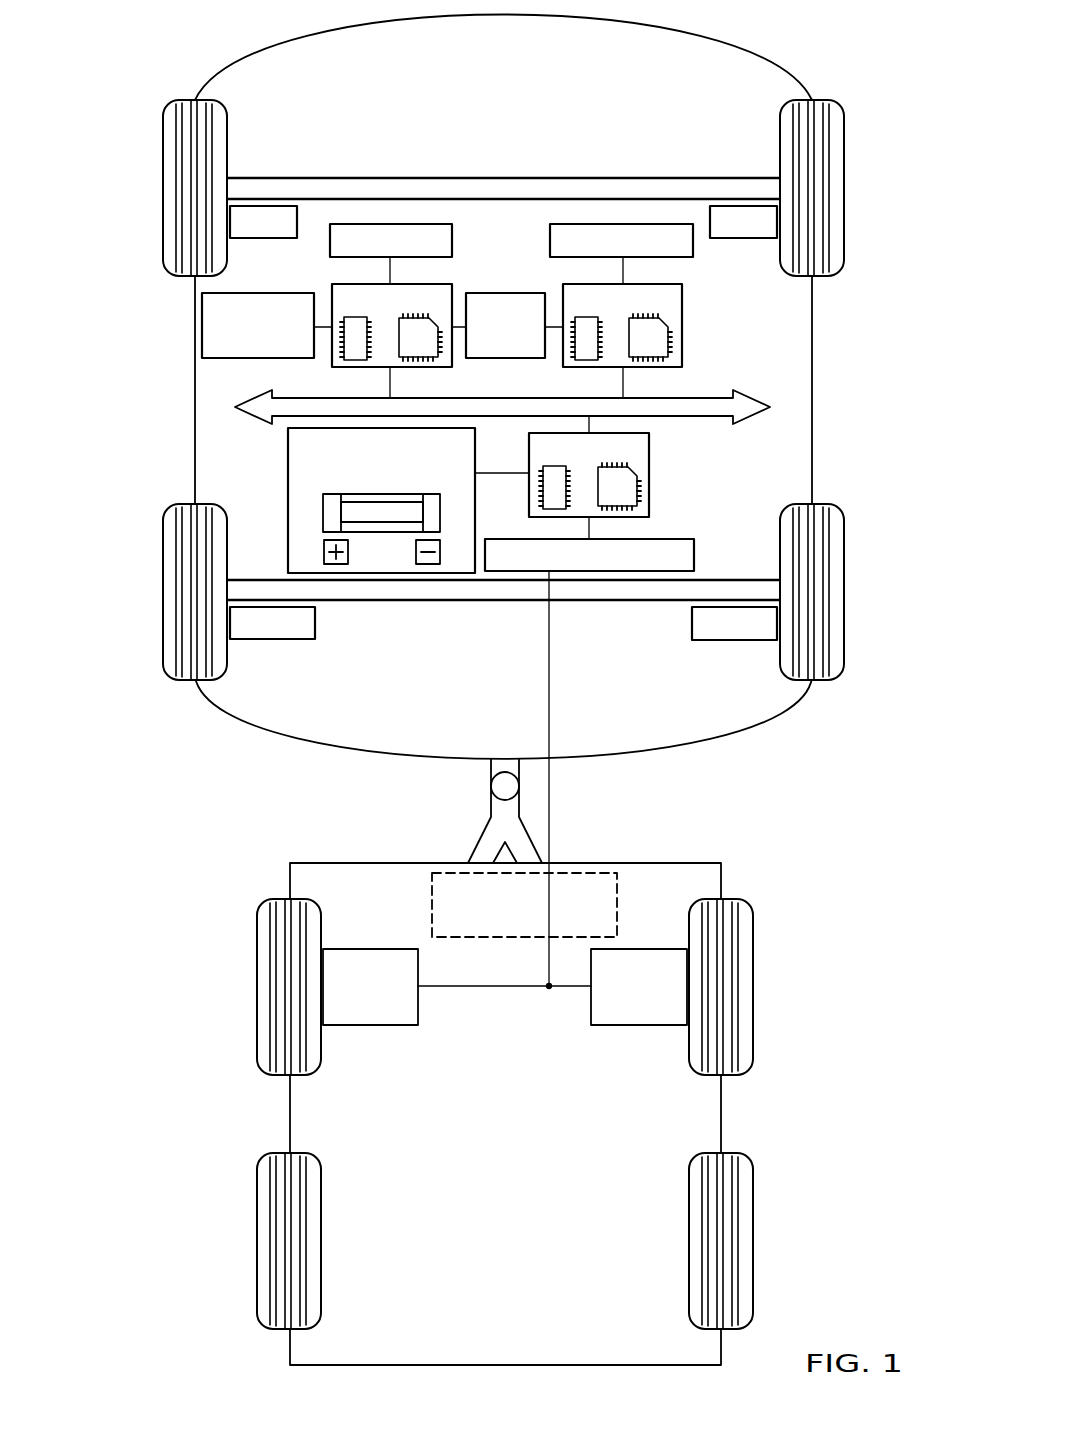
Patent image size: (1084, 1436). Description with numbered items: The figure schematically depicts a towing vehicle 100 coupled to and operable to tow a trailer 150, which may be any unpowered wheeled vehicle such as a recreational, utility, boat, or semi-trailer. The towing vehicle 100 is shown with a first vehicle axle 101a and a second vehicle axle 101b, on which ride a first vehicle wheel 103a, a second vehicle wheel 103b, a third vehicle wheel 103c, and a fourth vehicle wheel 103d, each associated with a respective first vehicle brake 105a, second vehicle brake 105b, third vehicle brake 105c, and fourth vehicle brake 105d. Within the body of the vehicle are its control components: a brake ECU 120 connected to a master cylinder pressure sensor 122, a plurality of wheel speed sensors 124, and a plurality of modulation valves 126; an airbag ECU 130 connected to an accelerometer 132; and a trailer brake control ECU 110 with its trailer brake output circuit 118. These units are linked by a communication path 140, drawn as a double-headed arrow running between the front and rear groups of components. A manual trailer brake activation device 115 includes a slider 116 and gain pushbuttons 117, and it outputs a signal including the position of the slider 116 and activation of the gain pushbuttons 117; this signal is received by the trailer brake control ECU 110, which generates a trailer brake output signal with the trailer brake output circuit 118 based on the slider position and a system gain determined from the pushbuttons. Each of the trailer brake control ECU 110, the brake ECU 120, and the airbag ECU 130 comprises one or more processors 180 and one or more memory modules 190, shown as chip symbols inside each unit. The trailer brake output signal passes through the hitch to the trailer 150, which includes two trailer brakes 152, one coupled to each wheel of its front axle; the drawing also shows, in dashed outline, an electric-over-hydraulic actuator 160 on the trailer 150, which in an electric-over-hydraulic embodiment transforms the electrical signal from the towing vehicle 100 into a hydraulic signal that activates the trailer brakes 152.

The towing vehicle 100 is at (812, 61).
The first vehicle axle 101a is at (496, 178).
The second vehicle axle 101b is at (507, 600).
The first vehicle wheel 103a is at (163, 155).
The second vehicle wheel 103b is at (163, 580).
The third vehicle wheel 103c is at (845, 164).
The fourth vehicle wheel 103d is at (845, 584).
The first vehicle brake 105a is at (265, 206).
The second vehicle brake 105b is at (276, 640).
The third vehicle brake 105c is at (742, 206).
The fourth vehicle brake 105d is at (732, 640).
The trailer brake control ECU 110 is at (649, 459).
The manual trailer brake activation device 115 is at (288, 458).
The slider 116 is at (323, 505).
The gain pushbuttons 117 is at (312, 549).
The trailer brake output circuit 118 is at (694, 556).
The brake ECU 120 is at (341, 284).
The master cylinder pressure sensor 122 is at (398, 224).
The wheel speed sensors 124 is at (500, 293).
The modulation valves 126 is at (202, 330).
The airbag ECU 130 is at (682, 300).
The accelerometer 132 is at (624, 224).
The communication path 140 is at (704, 398).
The trailer 150 is at (723, 862).
The trailer brakes 152 is at (370, 1025).
The electric-over-hydraulic actuator 160 is at (432, 900).
The processors 180 is at (344, 355).
The memory modules 190 is at (442, 350).